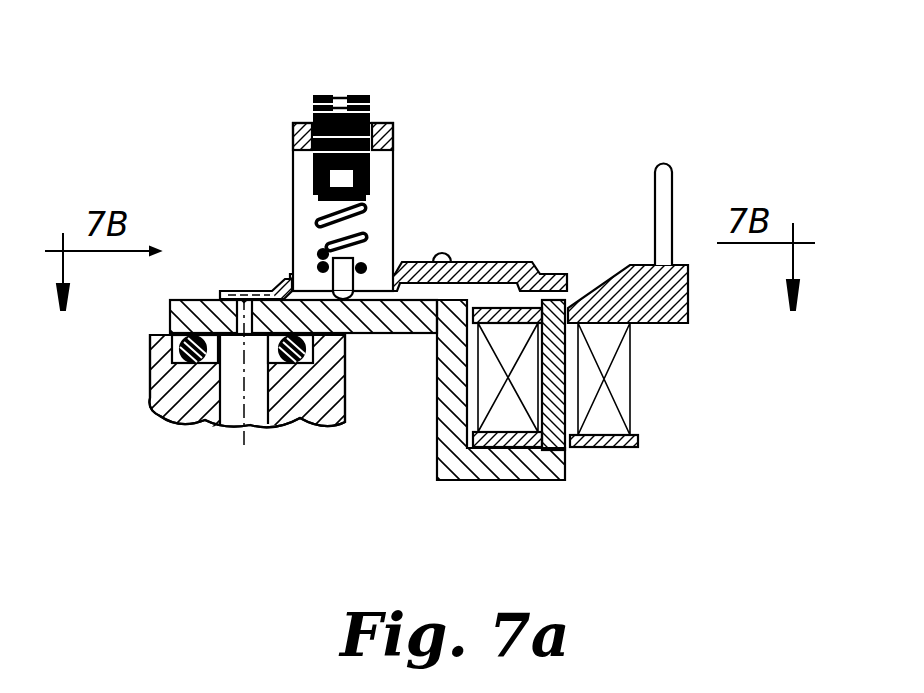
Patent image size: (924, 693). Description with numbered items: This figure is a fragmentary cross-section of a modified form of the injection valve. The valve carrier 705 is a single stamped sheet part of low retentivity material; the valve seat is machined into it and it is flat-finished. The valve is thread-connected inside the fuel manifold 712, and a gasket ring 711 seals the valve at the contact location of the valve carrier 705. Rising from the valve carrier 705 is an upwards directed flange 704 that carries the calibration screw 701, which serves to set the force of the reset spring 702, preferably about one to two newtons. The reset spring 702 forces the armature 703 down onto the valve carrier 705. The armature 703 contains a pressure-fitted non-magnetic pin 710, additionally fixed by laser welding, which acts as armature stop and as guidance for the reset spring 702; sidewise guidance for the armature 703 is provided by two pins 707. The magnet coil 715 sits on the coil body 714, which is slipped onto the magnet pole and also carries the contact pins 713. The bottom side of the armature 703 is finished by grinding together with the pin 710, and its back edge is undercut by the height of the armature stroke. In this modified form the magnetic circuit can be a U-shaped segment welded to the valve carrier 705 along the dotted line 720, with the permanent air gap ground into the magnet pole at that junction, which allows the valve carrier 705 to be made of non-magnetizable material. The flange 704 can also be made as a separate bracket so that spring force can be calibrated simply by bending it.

The calibration screw 701 is at (355, 92).
The reset spring 702 is at (368, 182).
The armature 703 is at (527, 262).
The flange 704 is at (300, 173).
The valve carrier 705 is at (382, 335).
The pins 707 is at (440, 252).
The non-magnetic pin 710 is at (330, 247).
The gasket ring 711 is at (167, 403).
The fuel manifold 712 is at (300, 407).
The contact pins 713 is at (674, 172).
The coil body 714 is at (668, 323).
The magnet coil 715 is at (623, 388).
The dotted line 720 is at (402, 340).